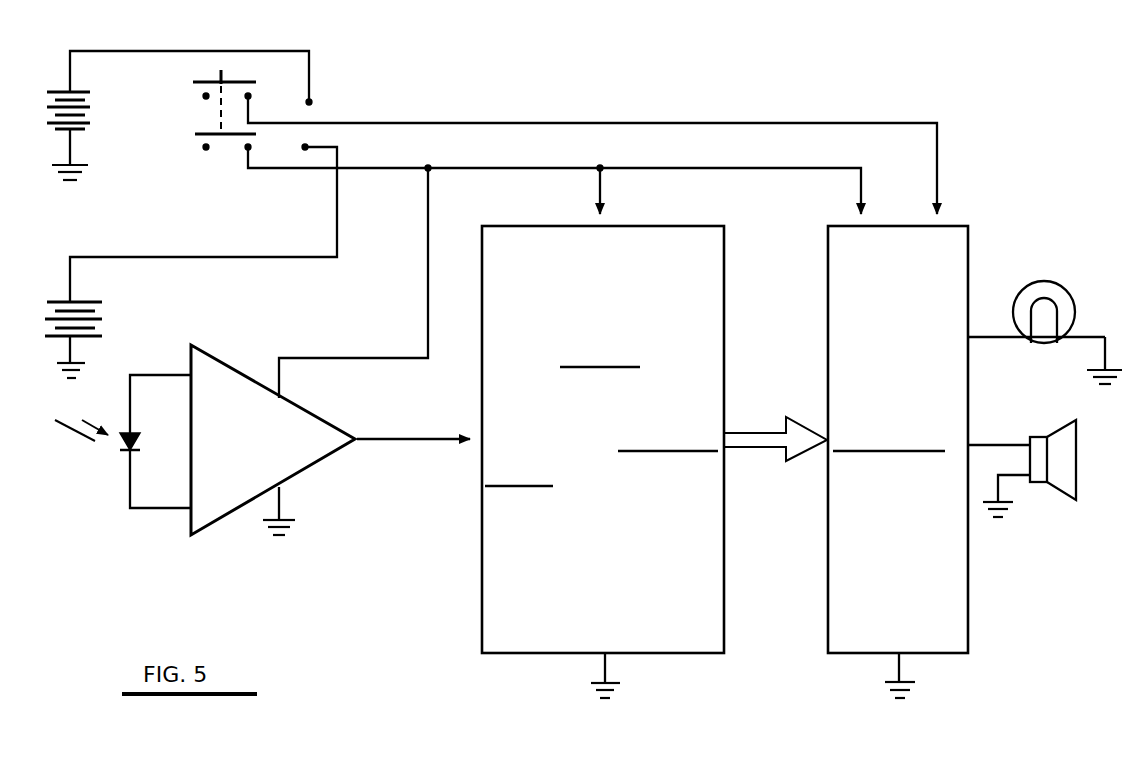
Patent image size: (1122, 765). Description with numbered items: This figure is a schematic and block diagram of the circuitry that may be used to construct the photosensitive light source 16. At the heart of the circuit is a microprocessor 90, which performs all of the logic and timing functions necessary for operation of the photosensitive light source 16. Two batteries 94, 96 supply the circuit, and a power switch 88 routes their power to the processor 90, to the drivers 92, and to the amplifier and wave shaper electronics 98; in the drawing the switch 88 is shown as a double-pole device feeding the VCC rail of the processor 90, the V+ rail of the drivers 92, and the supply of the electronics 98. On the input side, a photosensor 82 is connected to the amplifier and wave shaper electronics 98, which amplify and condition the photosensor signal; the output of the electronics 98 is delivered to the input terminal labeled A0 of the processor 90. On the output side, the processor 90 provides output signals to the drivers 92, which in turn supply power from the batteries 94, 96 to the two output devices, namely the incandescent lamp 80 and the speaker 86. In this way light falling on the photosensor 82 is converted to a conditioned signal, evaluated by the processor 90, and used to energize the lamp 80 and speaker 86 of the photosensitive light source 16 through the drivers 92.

The photosensitive light source 16 is at (649, 84).
The incandescent lamp 80 is at (1045, 282).
The photosensor 82 is at (122, 437).
The speaker 86 is at (1054, 483).
The power switch 88 is at (217, 73).
The microprocessor 90 is at (632, 581).
The drivers 92 is at (934, 581).
The battery 94 is at (90, 106).
The battery 96 is at (97, 329).
The amplifier and wave shaper electronics 98 is at (198, 363).